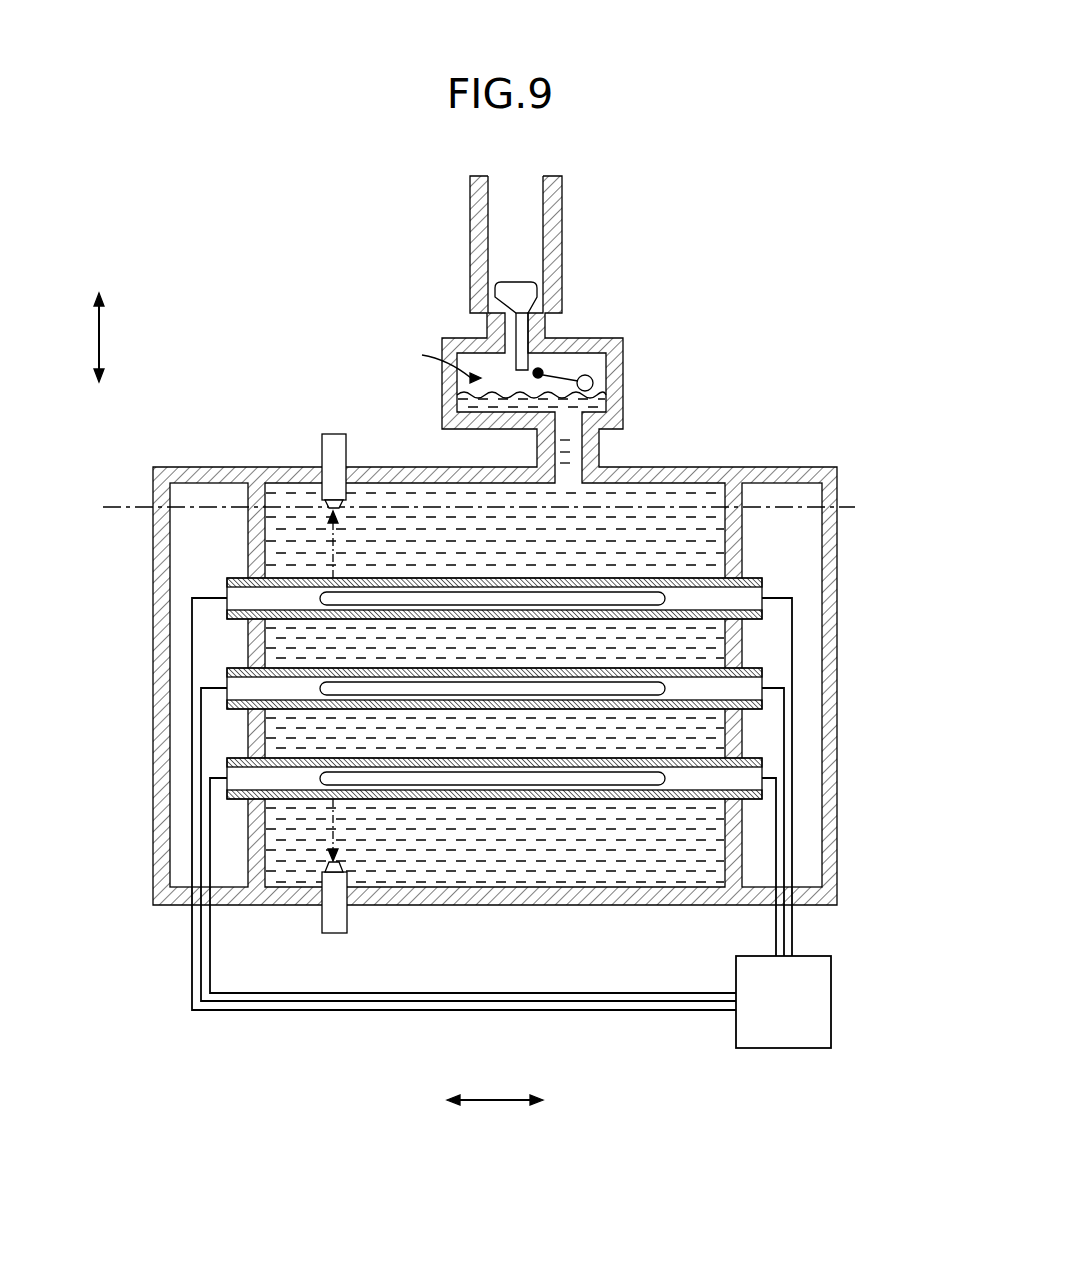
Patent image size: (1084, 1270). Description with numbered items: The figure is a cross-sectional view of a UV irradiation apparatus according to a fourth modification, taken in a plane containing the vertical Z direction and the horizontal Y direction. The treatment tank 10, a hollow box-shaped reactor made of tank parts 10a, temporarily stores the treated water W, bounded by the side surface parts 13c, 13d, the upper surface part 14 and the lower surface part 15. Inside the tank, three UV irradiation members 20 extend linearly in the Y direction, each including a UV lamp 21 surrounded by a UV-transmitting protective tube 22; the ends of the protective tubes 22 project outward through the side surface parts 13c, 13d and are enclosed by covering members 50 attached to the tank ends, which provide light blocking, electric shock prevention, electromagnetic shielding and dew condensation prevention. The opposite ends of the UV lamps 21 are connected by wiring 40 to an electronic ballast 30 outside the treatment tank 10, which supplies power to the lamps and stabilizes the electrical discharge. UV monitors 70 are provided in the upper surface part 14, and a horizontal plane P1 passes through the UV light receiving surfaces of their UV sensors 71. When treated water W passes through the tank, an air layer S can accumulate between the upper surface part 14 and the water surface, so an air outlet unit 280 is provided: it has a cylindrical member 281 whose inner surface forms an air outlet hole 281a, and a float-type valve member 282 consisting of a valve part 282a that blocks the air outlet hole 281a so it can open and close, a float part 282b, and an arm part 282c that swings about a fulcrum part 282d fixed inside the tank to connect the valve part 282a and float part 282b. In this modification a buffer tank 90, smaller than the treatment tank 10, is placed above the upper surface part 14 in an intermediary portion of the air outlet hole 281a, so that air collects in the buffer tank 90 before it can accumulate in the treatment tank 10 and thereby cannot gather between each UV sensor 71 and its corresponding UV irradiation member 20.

The treatment tank 10 is at (495, 563).
The tank part 10a is at (681, 459).
The side surface part 13c is at (247, 530).
The side surface part 13d is at (742, 525).
The upper surface part 14 is at (263, 468).
The lower surface part 15 is at (555, 905).
The UV irradiation member 20 is at (350, 423).
The UV lamp 21 is at (378, 591).
The protective tube 22 is at (411, 578).
The electronic ballast 30 is at (831, 1005).
The wiring 40 is at (778, 862).
The covering member 50 is at (205, 467).
The UV monitor 70 is at (332, 434).
The UV sensor 71 is at (325, 508).
The buffer tank 90 is at (623, 362).
The air outlet unit 280 is at (732, 181).
The cylindrical member 281 is at (562, 192).
The air outlet hole 281a is at (511, 330).
The valve member 282 is at (832, 223).
The valve part 282a is at (519, 286).
The float part 282b is at (546, 355).
The arm part 282c is at (532, 326).
The fulcrum part 282d is at (543, 373).
The air layer S is at (440, 365).
The treated water W is at (598, 392).
The horizontal plane P1 is at (130, 507).
The Z direction Z is at (90, 337).
The Y direction Y is at (495, 1116).